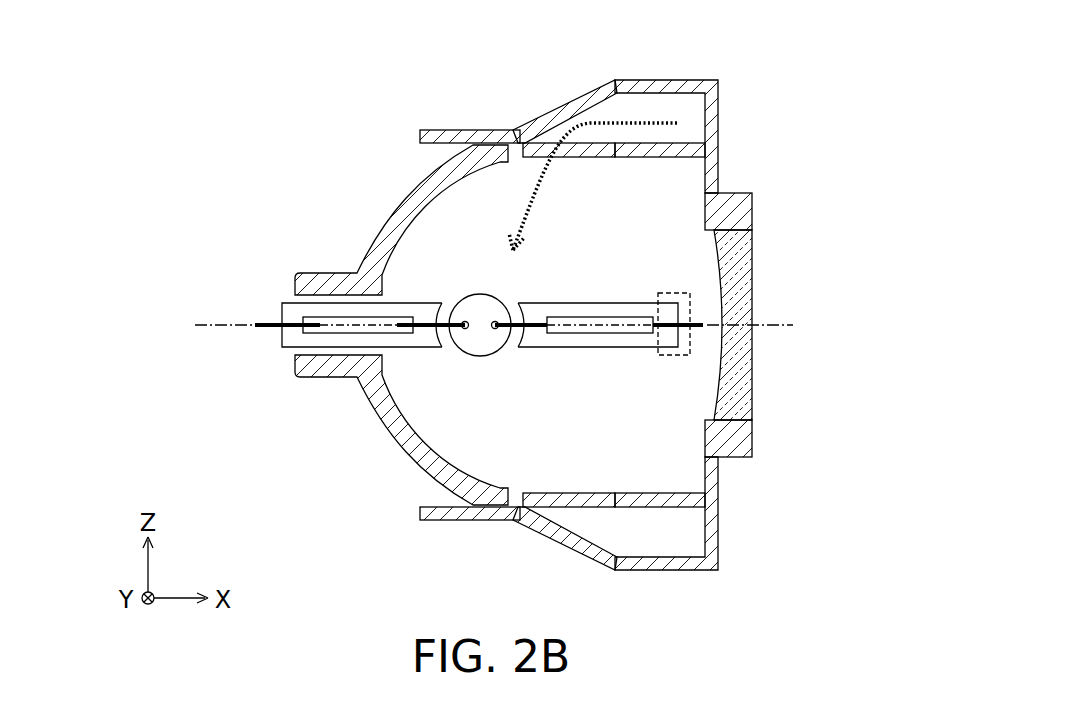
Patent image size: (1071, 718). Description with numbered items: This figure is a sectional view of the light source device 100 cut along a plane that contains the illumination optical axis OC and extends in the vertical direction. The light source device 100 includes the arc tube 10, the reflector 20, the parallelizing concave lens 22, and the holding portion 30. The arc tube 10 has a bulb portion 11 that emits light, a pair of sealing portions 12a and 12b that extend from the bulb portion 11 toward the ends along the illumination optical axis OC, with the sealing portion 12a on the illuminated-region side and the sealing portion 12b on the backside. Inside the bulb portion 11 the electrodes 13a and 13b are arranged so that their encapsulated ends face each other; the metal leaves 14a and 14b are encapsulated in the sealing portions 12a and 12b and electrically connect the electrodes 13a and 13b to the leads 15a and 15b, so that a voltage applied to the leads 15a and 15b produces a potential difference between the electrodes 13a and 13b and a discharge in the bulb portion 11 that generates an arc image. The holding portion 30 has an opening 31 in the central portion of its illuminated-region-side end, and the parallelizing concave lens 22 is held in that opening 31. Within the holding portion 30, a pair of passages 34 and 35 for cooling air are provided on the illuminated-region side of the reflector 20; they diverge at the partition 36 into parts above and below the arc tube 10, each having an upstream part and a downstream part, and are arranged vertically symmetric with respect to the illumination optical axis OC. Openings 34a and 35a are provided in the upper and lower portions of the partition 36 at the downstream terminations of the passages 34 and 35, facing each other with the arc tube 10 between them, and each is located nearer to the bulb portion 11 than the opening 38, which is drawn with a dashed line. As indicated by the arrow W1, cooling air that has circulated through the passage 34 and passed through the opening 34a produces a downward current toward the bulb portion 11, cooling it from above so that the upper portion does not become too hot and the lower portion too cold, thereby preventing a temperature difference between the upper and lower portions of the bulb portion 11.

The light source device 100 is at (783, 75).
The arc tube 10 is at (479, 251).
The bulb portion 11 is at (467, 282).
The sealing portion 12a is at (612, 305).
The sealing portion 12b is at (290, 303).
The electrode 13a is at (500, 340).
The electrode 13b is at (462, 340).
The metal leaf 14a is at (585, 335).
The metal leaf 14b is at (352, 335).
The lead 15a is at (683, 347).
The lead 15b is at (270, 347).
The reflector 20 is at (385, 218).
The parallelizing concave lens 22 is at (752, 380).
The holding portion 30 is at (480, 130).
The opening 31 is at (752, 234).
The passage 34 is at (628, 96).
The opening 34a is at (609, 158).
The passage 35 is at (635, 553).
The opening 35a is at (607, 493).
The partition 36 is at (666, 158).
The opening 38 is at (677, 293).
The arrow W1 is at (519, 232).
The illumination optical axis OC is at (780, 325).